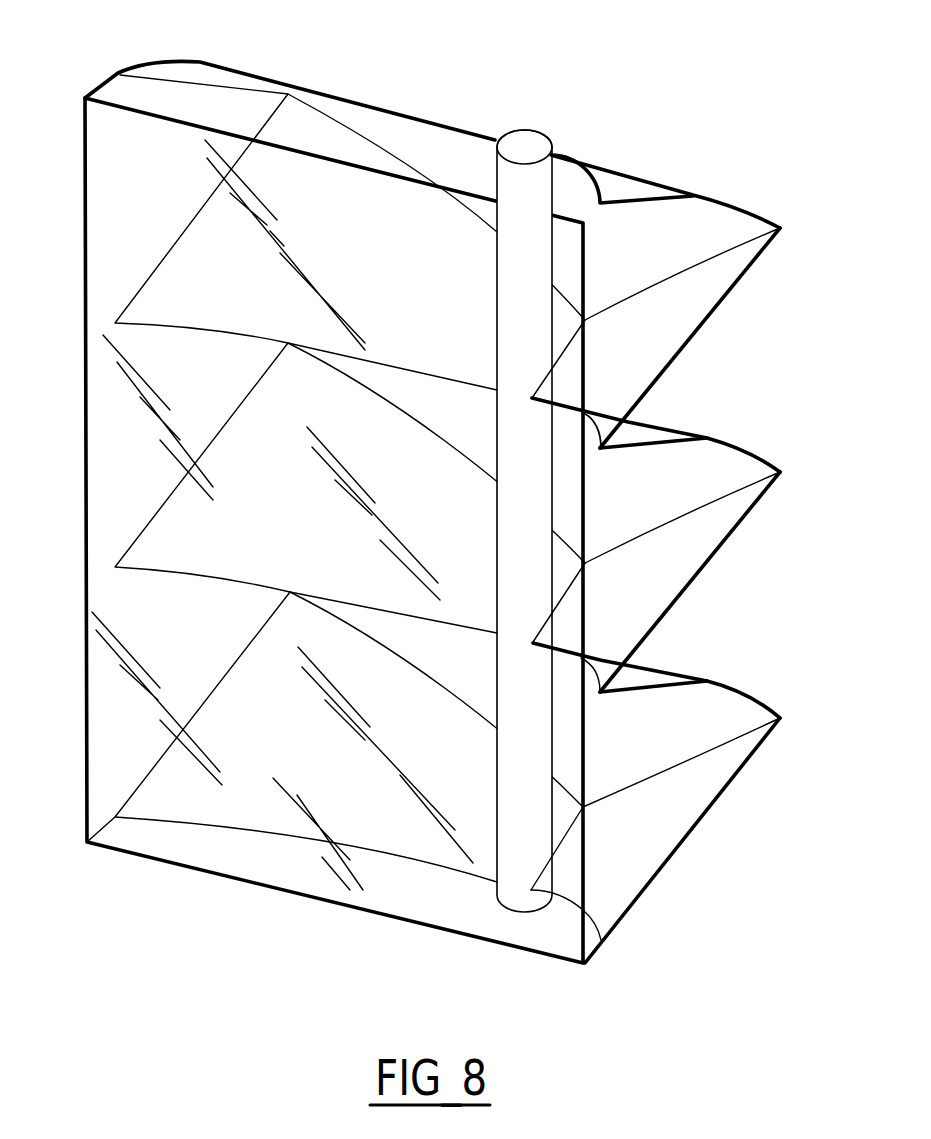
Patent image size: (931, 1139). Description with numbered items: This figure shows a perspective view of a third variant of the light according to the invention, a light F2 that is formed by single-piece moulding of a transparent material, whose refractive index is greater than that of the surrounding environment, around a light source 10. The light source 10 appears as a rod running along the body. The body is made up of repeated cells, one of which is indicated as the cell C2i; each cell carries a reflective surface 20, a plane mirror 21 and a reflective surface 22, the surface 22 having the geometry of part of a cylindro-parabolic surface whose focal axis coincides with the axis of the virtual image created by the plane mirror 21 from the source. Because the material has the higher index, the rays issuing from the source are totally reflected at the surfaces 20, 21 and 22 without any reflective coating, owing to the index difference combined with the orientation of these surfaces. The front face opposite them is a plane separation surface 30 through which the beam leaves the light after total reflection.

The light source 10 is at (522, 833).
The reflective surface 20 is at (178, 541).
The plane mirror 21 is at (645, 597).
The reflective surface 22 is at (652, 488).
The plane separation surface 30 is at (118, 188).
The cell C2i is at (823, 430).
The light F2 is at (668, 133).